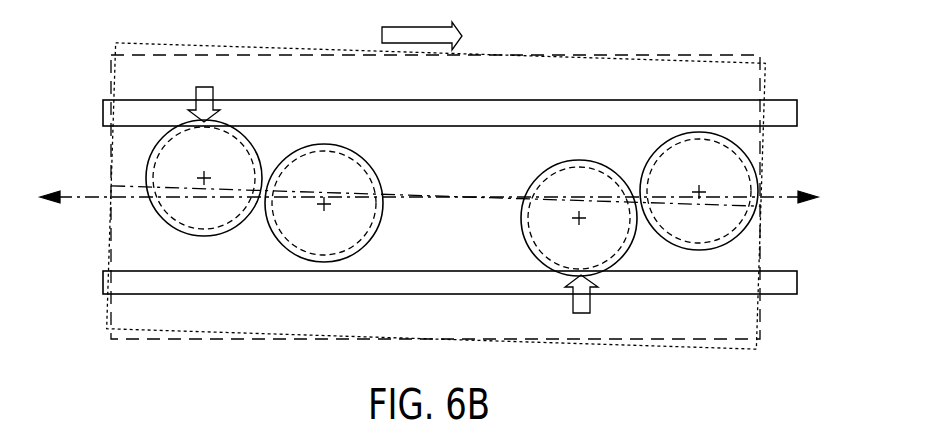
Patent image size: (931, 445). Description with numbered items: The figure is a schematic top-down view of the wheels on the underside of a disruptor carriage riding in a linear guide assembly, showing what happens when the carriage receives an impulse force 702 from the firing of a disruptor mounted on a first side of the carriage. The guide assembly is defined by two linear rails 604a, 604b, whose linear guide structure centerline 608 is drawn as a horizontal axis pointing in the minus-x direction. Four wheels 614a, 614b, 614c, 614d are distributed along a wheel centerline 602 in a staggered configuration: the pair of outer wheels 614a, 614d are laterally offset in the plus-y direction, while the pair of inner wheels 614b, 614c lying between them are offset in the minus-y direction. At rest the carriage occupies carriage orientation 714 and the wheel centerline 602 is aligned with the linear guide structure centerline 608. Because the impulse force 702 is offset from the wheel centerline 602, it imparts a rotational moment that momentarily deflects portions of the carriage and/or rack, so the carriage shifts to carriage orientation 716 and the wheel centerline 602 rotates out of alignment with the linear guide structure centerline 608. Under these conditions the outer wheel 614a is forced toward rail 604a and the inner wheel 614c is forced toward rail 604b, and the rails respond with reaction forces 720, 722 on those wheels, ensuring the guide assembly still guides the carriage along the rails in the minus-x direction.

The wheel centerline 602 is at (128, 186).
The linear guide structure centerline 608 is at (92, 198).
The linear rail 604a is at (418, 110).
The linear rail 604b is at (413, 278).
The outer wheel 614a is at (210, 235).
The inner wheel 614b is at (368, 163).
The inner wheel 614c is at (537, 180).
The outer wheel 614d is at (733, 233).
The impulse force 702 is at (382, 33).
The carriage orientation 714 is at (190, 339).
The carriage orientation 716 is at (723, 349).
The reaction force 720 is at (217, 92).
The reaction force 722 is at (590, 300).